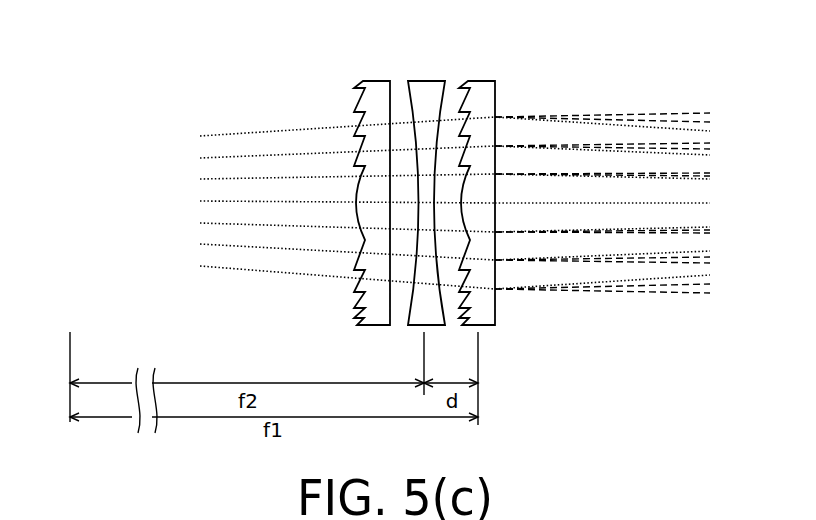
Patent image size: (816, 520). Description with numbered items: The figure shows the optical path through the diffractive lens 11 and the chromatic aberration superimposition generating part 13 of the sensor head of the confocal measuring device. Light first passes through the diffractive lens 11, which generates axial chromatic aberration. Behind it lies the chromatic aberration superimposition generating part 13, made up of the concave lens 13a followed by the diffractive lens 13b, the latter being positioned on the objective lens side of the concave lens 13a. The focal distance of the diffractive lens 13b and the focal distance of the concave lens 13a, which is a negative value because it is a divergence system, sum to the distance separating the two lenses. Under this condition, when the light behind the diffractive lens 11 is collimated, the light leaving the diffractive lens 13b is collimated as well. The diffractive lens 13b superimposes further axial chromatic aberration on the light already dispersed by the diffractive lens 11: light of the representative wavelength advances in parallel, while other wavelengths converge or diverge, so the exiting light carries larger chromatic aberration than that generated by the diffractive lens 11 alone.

The diffractive lens 11 is at (373, 88).
The chromatic aberration superimposition generating part 13 is at (454, 167).
The concave lens 13a is at (426, 88).
The diffractive lens 13b is at (479, 184).